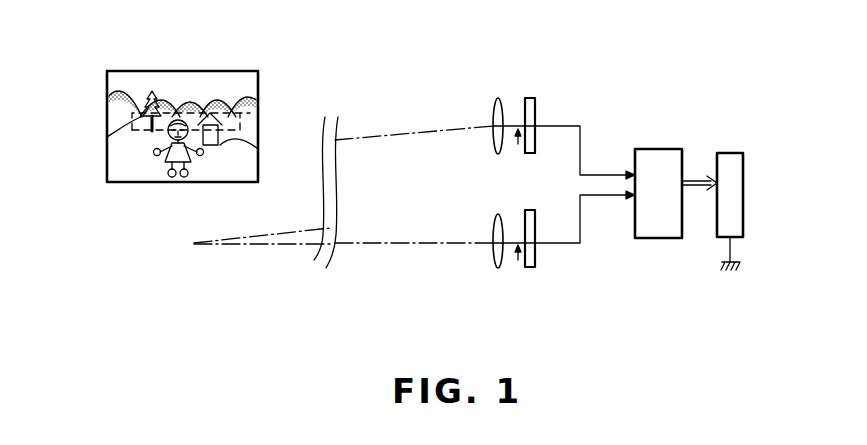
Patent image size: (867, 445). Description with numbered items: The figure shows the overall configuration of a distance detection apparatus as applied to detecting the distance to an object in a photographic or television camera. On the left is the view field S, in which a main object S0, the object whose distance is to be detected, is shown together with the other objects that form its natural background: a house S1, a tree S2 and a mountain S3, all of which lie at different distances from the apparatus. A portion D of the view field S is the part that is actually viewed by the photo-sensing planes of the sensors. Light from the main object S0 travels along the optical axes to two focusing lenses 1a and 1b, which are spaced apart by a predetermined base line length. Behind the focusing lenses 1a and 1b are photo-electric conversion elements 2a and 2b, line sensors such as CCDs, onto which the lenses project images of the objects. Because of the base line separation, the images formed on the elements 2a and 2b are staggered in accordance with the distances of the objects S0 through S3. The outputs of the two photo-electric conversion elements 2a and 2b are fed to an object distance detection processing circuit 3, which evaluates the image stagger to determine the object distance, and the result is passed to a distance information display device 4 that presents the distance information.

The view field S is at (182, 78).
The main object S0 is at (196, 160).
The house S1 is at (258, 149).
The tree S2 is at (107, 137).
The mountain S3 is at (213, 100).
The portion of the view field D is at (258, 118).
The focusing lens 1a is at (497, 99).
The photo-electric conversion element 2a is at (531, 97).
The focusing lens 1b is at (497, 269).
The photo-electric conversion element 2b is at (531, 268).
The object distance detection processing circuit 3 is at (660, 149).
The distance information display device 4 is at (731, 153).